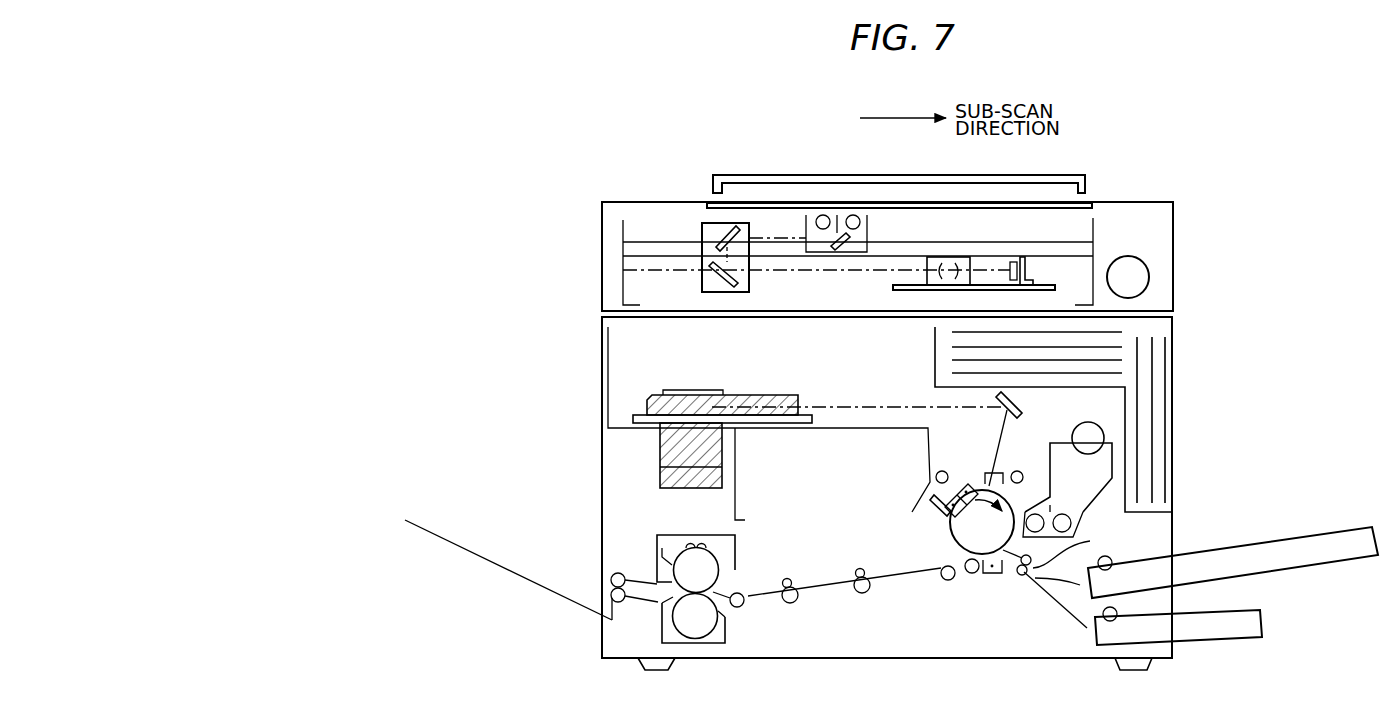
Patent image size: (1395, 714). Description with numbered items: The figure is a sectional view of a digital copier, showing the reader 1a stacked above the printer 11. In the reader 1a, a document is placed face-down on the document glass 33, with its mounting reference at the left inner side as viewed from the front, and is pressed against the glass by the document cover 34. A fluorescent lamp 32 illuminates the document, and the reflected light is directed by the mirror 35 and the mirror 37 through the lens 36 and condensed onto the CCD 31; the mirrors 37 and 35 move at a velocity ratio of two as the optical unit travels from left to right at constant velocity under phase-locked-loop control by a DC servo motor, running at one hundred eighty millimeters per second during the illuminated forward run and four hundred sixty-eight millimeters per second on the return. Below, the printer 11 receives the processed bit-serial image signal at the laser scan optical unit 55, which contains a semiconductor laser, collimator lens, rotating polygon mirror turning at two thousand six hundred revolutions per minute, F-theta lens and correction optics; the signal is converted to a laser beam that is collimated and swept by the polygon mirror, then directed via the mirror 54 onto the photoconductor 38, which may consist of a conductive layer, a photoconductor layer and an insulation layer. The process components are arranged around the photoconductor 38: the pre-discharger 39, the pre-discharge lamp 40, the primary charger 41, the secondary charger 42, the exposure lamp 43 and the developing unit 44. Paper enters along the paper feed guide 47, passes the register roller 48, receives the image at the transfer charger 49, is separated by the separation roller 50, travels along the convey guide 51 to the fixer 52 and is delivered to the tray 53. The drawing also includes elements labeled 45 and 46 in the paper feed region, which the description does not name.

The reader 1a is at (1162, 242).
The printer 11 is at (1172, 400).
The CCD 31 is at (1025, 262).
The fluorescent lamp 32 is at (853, 214).
The document glass 33 is at (960, 202).
The document cover 34 is at (1065, 188).
The mirror 35 is at (705, 225).
The lens 36 is at (955, 262).
The mirror 37 is at (843, 250).
The photoconductor 38 is at (952, 540).
The pre-discharger 39 is at (957, 478).
The pre-discharge lamp 40 is at (938, 472).
The primary charger 41 is at (965, 480).
The secondary charger 42 is at (998, 473).
The exposure lamp 43 is at (1020, 470).
The developing unit 44 is at (1098, 500).
The paper feed tray 45 is at (1157, 560).
The feed roller 46 is at (1108, 556).
The paper feed guide 47 is at (1055, 580).
The register roller 48 is at (1022, 575).
The transfer charger 49 is at (990, 577).
The separation roller 50 is at (970, 574).
The convey guide 51 is at (885, 577).
The fixer 52 is at (710, 568).
The tray 53 is at (500, 560).
The mirror 54 is at (1020, 403).
The laser scan optical unit 55 is at (770, 395).